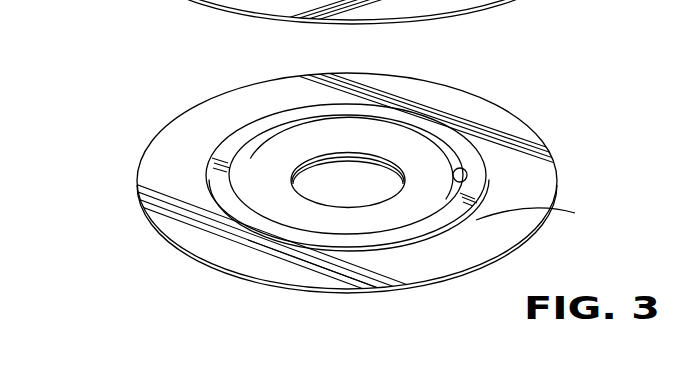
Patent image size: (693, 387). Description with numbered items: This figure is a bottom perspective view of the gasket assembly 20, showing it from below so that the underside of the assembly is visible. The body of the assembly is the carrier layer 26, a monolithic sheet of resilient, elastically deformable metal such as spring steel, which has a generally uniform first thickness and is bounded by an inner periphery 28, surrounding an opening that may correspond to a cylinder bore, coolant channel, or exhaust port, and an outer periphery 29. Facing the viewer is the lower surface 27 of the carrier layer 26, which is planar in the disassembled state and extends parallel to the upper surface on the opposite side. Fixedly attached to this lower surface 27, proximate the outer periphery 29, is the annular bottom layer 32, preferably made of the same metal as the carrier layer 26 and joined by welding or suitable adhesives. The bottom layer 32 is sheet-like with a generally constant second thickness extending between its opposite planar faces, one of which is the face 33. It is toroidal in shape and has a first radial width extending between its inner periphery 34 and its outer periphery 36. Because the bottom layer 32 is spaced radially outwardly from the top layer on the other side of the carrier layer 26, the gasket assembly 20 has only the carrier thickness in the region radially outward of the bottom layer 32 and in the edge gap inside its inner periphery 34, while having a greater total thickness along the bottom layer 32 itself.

The gasket assembly 20 is at (363, 165).
The carrier layer 26 is at (330, 186).
The lower surface 27 is at (407, 146).
The inner periphery 28 is at (293, 178).
The outer periphery 29 is at (173, 122).
The bottom layer 32 is at (425, 118).
The face of bottom layer 33 is at (464, 144).
The inner periphery of bottom layer 34 is at (467, 175).
The outer periphery of bottom layer 36 is at (536, 214).